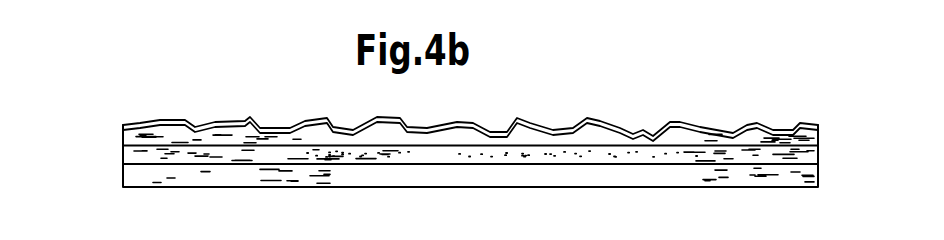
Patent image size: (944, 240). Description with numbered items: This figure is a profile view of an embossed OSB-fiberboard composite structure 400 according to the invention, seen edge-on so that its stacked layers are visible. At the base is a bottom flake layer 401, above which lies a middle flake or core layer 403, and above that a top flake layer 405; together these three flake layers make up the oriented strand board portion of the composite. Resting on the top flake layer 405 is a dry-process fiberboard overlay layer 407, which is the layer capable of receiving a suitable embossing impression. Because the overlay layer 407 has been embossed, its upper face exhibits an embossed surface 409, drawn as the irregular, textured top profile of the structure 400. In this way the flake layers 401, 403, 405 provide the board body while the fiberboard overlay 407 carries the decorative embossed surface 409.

The OSB-fiberboard composite structure 400 is at (579, 96).
The bottom flake layer 401 is at (122, 175).
The middle flake or core layer 403 is at (122, 156).
The top flake layer 405 is at (122, 145).
The dry-process fiberboard overlay layer 407 is at (122, 131).
The embossed surface 409 is at (313, 118).